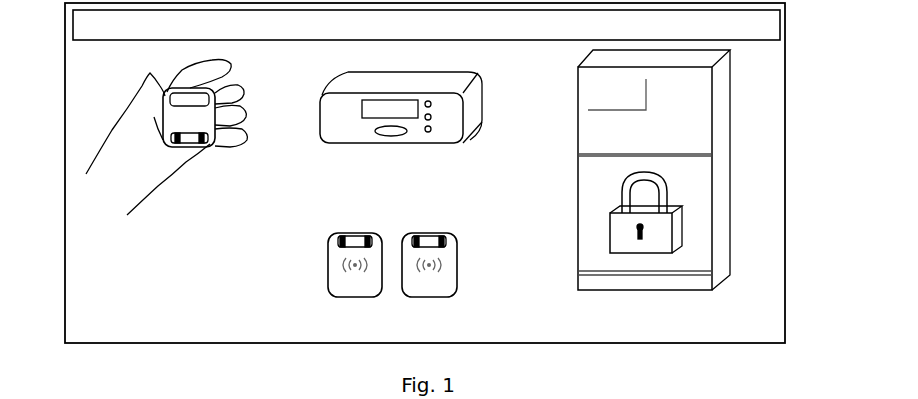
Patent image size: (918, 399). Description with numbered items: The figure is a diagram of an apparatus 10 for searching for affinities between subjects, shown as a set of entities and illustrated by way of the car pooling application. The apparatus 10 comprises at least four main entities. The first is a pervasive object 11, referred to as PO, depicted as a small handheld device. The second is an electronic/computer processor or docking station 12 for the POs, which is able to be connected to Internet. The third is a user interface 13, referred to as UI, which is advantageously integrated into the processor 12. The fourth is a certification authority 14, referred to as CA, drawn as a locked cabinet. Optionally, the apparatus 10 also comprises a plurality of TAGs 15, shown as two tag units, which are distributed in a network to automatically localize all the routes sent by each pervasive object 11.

The apparatus for searching for affinities 10 is at (723, 358).
The pervasive object 11 is at (168, 118).
The electronic/computer processor or docking station 12 is at (337, 115).
The user interface 13 is at (381, 103).
The certification authority 14 is at (698, 125).
The TAGs 15 is at (334, 263).